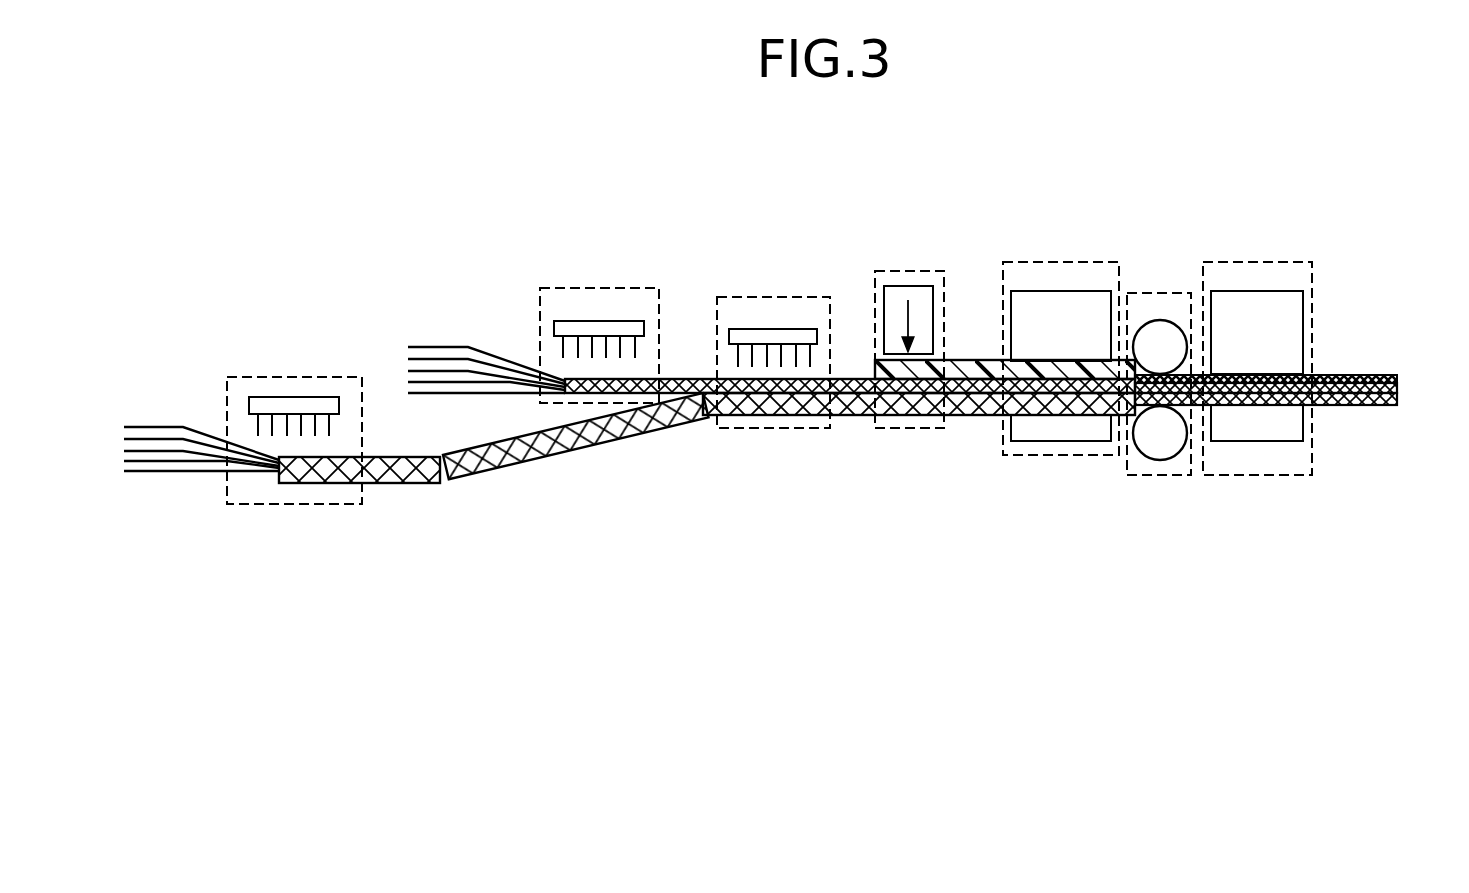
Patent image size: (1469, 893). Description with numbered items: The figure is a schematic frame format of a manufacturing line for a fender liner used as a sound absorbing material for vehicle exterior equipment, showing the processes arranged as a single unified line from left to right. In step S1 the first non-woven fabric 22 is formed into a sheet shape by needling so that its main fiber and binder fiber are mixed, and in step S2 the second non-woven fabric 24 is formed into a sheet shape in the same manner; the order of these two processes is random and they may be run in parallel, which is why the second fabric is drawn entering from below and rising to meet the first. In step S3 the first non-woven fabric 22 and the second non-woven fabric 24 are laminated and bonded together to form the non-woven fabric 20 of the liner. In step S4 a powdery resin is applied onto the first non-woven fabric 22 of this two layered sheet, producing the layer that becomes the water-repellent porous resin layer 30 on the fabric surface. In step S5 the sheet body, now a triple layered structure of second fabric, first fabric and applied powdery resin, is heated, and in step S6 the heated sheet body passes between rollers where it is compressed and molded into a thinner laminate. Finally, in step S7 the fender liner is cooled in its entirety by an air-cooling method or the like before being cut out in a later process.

The non-woven fabric 20 is at (865, 478).
The first non-woven fabric 22 is at (672, 384).
The second non-woven fabric 24 is at (620, 438).
The porous resin layer 30 is at (1370, 375).
The step S1 is at (598, 287).
The step S2 is at (292, 376).
The step S3 is at (777, 296).
The step S4 is at (913, 270).
The step S5 is at (1056, 261).
The step S6 is at (1160, 292).
The step S7 is at (1270, 261).